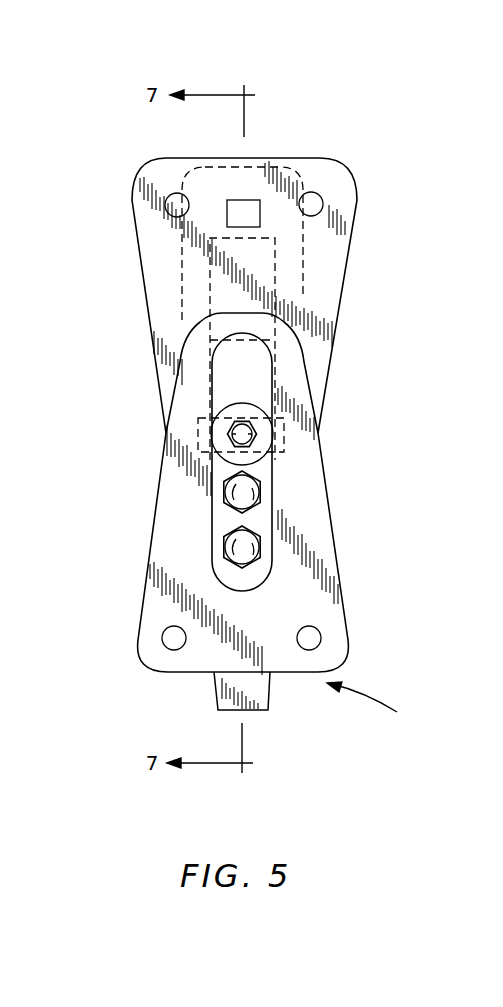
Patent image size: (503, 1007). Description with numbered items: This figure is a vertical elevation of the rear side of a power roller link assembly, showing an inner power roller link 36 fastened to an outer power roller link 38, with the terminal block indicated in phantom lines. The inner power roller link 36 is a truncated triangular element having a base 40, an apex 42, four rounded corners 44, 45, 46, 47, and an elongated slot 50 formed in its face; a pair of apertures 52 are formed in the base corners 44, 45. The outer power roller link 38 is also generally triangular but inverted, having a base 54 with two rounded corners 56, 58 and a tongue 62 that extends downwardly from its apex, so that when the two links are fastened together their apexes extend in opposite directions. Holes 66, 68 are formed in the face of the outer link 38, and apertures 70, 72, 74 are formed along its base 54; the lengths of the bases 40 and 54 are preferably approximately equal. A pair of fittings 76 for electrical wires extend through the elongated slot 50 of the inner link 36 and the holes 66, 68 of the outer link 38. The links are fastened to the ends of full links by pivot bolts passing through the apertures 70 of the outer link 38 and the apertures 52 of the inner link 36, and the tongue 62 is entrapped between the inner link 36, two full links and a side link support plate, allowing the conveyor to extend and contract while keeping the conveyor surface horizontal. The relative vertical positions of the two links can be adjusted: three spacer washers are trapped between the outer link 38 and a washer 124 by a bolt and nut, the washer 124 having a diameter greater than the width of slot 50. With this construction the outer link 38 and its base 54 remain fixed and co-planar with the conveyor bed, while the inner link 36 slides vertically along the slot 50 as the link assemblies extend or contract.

The inner power roller link 36 is at (260, 401).
The outer power roller link 38 is at (330, 265).
The base 40 is at (381, 703).
The apex 42 is at (254, 312).
The rounded corner 44 is at (148, 663).
The rounded corner 45 is at (337, 658).
The rounded corner 46 is at (281, 331).
The rounded corner 47 is at (200, 330).
The elongated slot 50 is at (233, 367).
The apertures 52 is at (322, 636).
The base 54 is at (318, 170).
The rounded corner 56 is at (150, 168).
The rounded corner 58 is at (347, 173).
The tongue 62 is at (268, 703).
The hole 66 is at (228, 507).
The hole 68 is at (230, 557).
The aperture 70 is at (170, 207).
The aperture 72 is at (242, 205).
The aperture 74 is at (316, 205).
The fittings for electrical wires 76 is at (262, 482).
The washer 124 is at (230, 460).